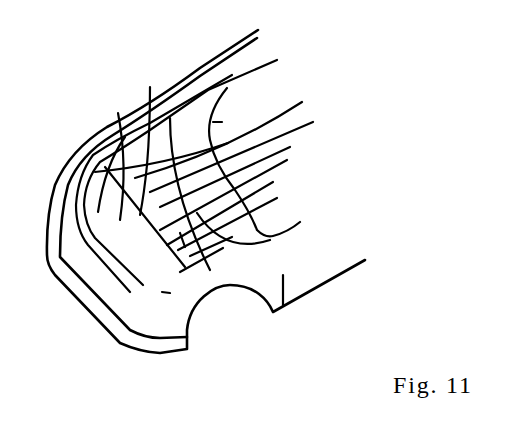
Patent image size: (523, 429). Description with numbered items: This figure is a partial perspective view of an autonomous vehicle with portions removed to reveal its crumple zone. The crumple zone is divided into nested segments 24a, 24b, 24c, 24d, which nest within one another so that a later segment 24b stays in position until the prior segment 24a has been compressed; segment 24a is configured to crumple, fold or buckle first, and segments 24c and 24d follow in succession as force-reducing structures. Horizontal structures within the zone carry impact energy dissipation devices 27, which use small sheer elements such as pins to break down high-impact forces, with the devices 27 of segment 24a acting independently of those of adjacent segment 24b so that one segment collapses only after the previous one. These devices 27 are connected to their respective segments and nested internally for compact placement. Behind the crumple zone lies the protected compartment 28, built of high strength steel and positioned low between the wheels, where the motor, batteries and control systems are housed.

The crumple zone segment 24a is at (93, 147).
The crumple zone segment 24b is at (120, 117).
The crumple zone segment 24c is at (158, 103).
The crumple zone segment 24d is at (190, 108).
The impact energy dissipation device 27 is at (80, 229).
The protected compartment 28 is at (274, 130).